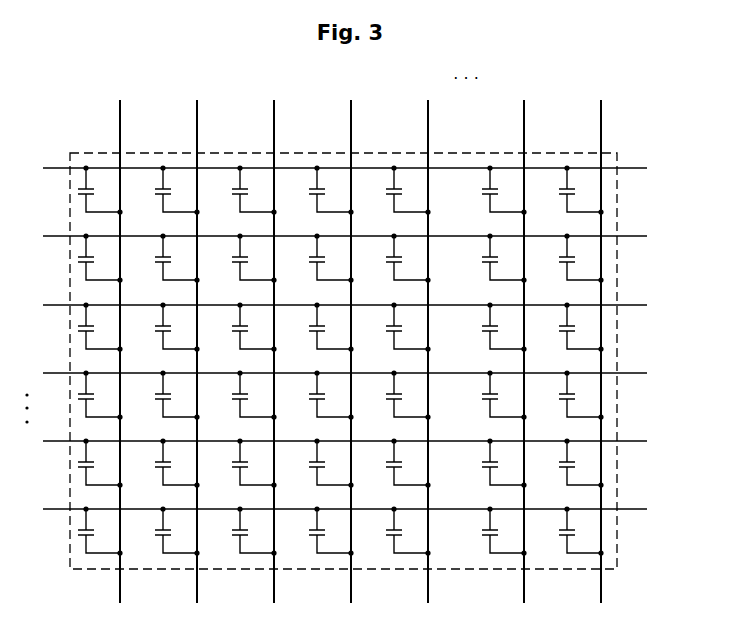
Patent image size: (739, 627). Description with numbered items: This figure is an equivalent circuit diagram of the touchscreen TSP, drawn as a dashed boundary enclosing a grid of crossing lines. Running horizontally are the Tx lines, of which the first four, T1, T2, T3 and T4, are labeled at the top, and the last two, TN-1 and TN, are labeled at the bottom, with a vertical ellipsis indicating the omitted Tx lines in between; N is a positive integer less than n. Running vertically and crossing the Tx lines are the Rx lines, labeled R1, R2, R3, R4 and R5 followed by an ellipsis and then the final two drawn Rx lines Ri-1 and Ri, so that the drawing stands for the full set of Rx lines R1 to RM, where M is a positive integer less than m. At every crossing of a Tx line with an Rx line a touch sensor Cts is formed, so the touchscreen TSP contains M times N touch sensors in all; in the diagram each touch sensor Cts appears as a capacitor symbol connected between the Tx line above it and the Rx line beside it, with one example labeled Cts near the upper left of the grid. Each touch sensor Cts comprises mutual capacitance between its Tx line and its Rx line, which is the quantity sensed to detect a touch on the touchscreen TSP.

The Rx line R1 is at (119, 338).
The Rx line R2 is at (196, 338).
The Rx line R3 is at (273, 338).
The Rx line R4 is at (350, 338).
The Rx line R5 is at (427, 338).
The Rx line Ri-1 is at (524, 338).
The Rx line Ri is at (601, 338).
The Tx line T1 is at (333, 168).
The Tx line T2 is at (333, 236).
The Tx line T3 is at (333, 305).
The Tx line T4 is at (333, 373).
The Tx line TN-1 is at (325, 441).
The Tx line TN is at (332, 509).
The touch sensor Cts is at (156, 191).
The touchscreen TSP is at (617, 401).